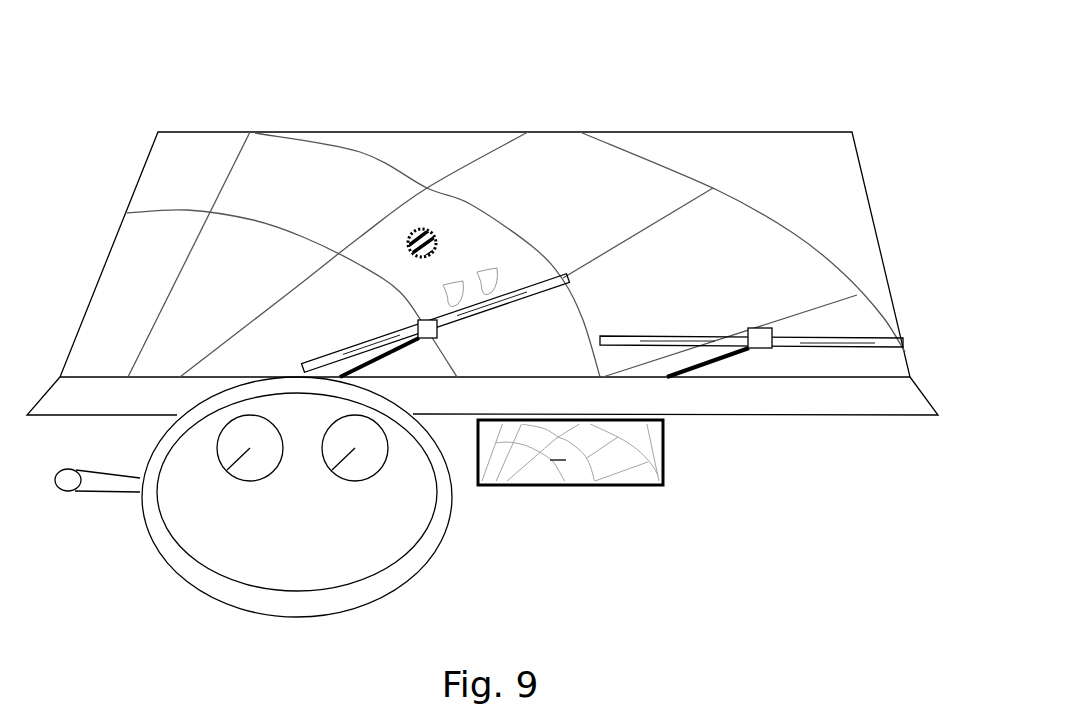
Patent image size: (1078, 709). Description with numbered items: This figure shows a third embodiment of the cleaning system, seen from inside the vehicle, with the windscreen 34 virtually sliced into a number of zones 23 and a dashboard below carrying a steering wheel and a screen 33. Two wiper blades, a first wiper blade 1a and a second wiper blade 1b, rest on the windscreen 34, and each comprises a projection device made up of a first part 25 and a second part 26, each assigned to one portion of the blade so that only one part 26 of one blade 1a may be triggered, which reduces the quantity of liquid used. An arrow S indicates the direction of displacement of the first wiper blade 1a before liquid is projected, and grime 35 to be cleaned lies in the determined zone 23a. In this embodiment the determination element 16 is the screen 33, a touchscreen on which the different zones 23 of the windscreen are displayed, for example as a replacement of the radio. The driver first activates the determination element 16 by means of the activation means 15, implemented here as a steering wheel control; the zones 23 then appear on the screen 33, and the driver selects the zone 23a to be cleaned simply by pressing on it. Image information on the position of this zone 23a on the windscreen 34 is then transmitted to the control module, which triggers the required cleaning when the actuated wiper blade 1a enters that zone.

The first wiper blade 1a is at (332, 360).
The second wiper blade 1b is at (885, 330).
The activation means 15 is at (68, 483).
The determination element 16 is at (537, 503).
The zone of the windscreen 23 is at (189, 191).
The determined zone of the windscreen 23a is at (411, 274).
The first part of the projection device 25 is at (395, 325).
The second part of the projection device 26 is at (523, 297).
The screen 33 is at (610, 485).
The windscreen 34 is at (750, 107).
The grime 35 is at (430, 222).
The arrow indicating direction of displacement S is at (494, 236).